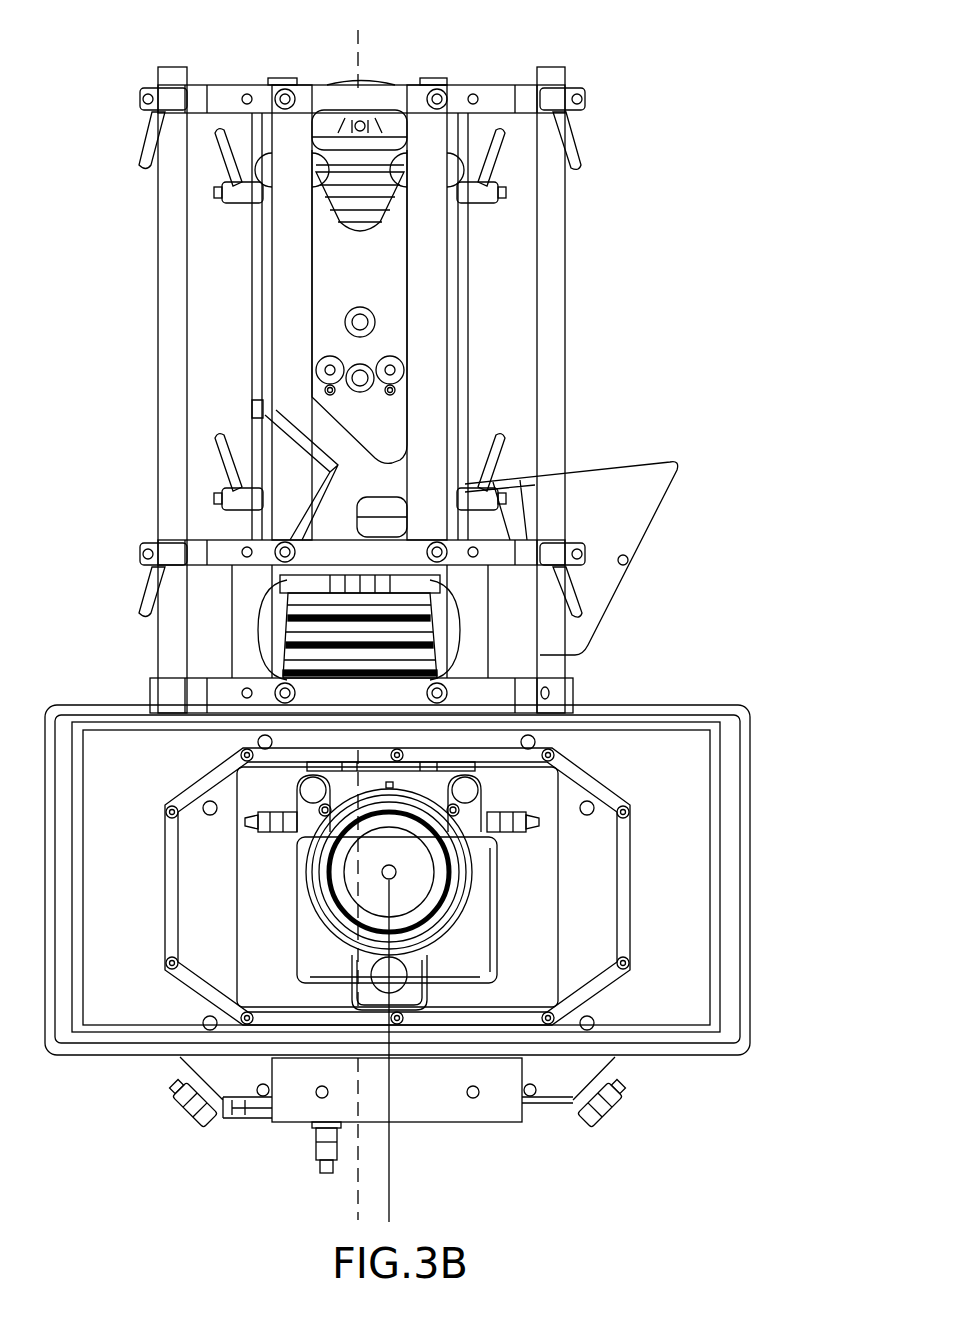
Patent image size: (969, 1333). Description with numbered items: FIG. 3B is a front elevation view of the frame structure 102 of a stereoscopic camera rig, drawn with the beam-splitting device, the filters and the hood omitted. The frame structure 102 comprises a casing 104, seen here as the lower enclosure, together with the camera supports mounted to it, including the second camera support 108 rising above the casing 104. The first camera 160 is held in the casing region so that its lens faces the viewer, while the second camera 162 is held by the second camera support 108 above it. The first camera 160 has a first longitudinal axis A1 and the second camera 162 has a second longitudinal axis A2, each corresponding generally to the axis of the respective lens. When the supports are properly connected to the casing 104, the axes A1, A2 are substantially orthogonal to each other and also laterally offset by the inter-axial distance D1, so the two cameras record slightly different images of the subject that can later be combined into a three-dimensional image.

The frame structure 102 is at (700, 190).
The casing 104 is at (760, 695).
The second camera support 108 is at (125, 93).
The first camera 160 is at (465, 957).
The second camera 162 is at (320, 635).
The first longitudinal axis A1 is at (397, 872).
The second longitudinal axis A2 is at (355, 1188).
The inter-axial distance D1 is at (398, 1203).